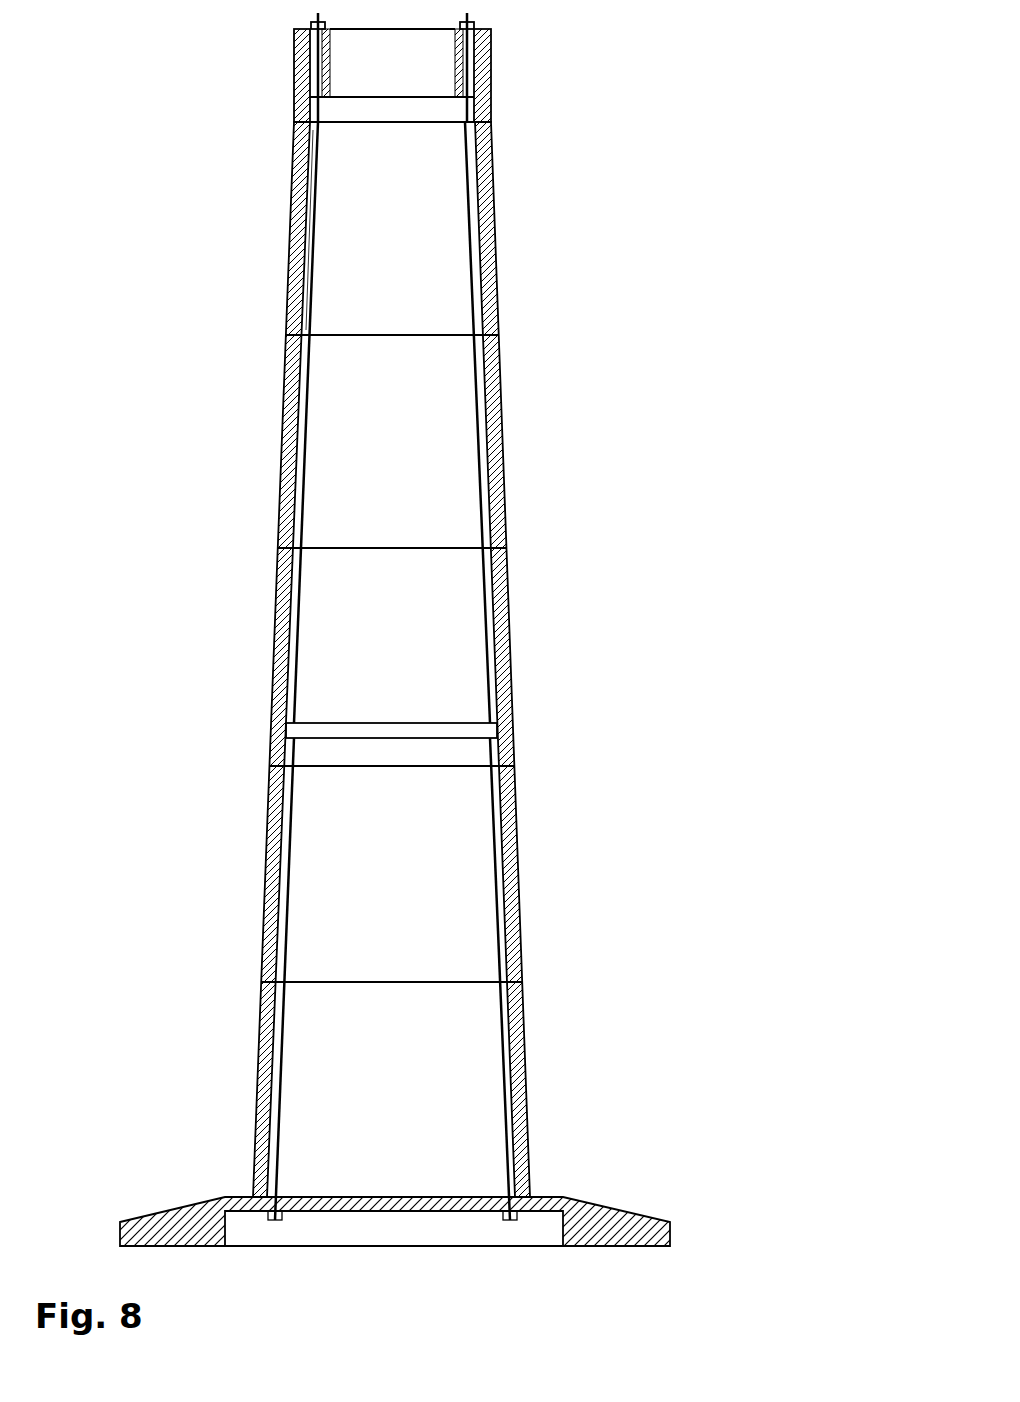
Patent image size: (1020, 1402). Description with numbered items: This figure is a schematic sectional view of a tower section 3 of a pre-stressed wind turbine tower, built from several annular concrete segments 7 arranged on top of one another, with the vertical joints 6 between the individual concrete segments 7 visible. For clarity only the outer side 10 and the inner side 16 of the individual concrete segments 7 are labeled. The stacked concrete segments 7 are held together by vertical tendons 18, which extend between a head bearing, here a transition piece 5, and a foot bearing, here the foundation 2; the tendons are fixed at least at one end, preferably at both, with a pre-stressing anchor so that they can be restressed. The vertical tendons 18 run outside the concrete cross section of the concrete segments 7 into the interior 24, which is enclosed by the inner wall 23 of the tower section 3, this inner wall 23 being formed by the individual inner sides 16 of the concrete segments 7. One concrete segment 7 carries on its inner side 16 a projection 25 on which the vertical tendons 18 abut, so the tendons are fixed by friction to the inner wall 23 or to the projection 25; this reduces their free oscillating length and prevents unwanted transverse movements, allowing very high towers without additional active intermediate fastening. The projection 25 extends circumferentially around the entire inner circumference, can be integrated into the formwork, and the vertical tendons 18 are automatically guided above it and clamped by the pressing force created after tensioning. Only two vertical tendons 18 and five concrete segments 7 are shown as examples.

The foundation 2 is at (415, 1162).
The tower section 3 is at (577, 298).
The transition piece 5 is at (451, 61).
The vertical joints 6 is at (443, 590).
The concrete segments 7 is at (540, 651).
The outer side 10 is at (230, 659).
The inner side 16 is at (391, 422).
The vertical tendons 18 is at (395, 979).
The inner wall 23 is at (304, 295).
The interior 24 is at (371, 475).
The projection 25 is at (326, 674).